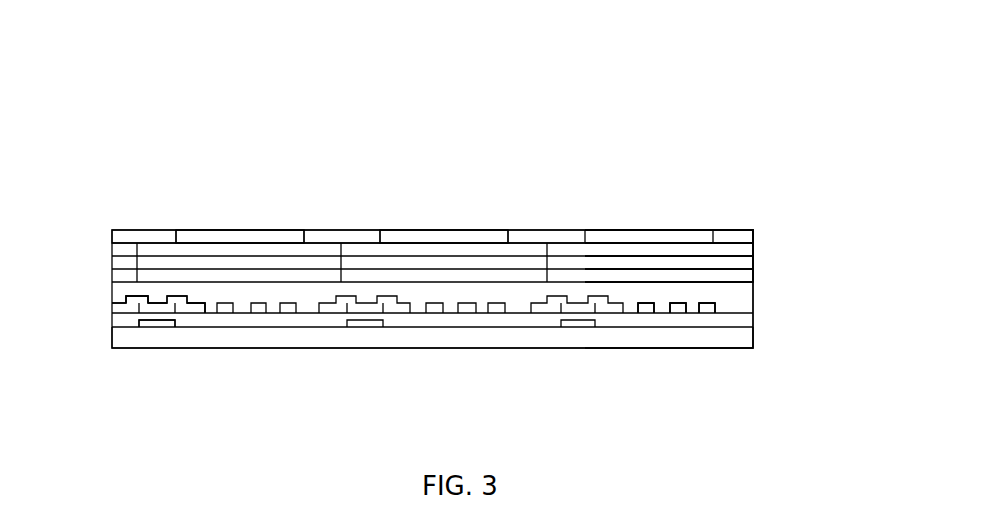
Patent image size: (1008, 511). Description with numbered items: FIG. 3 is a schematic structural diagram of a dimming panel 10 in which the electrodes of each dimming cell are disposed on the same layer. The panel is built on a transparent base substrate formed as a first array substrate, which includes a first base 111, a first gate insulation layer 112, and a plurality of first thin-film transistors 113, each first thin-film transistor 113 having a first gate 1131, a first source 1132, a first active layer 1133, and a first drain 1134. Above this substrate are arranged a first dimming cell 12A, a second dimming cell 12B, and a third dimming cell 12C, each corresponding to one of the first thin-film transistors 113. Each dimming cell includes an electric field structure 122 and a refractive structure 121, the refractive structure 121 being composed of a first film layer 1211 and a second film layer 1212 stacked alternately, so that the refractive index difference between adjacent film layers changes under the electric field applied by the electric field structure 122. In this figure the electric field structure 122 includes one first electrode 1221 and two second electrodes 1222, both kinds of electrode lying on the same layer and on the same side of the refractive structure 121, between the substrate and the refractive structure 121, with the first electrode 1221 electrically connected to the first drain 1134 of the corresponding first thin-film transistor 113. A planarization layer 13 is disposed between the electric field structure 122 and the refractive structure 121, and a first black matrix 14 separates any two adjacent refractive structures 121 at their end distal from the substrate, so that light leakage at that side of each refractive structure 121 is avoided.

The dimming panel 10 is at (438, 61).
The first black matrix 14 is at (111, 231).
The planarization layer 13 is at (111, 295).
The first gate insulation layer 112 is at (111, 321).
The first base 111 is at (111, 339).
The first thin-film transistor 113 is at (78, 367).
The first gate 1131 is at (169, 323).
The first source 1132 is at (132, 311).
The first active layer 1133 is at (150, 311).
The first drain 1134 is at (192, 311).
The first dimming cell 12A is at (180, 221).
The second dimming cell 12B is at (386, 221).
The third dimming cell 12C is at (835, 121).
The refractive structure 121 is at (785, 97).
The first film layer 1211 is at (643, 259).
The second film layer 1212 is at (623, 274).
The electric field structure 122 is at (783, 360).
The first electrode 1221 is at (679, 314).
The second electrode 1222 is at (707, 314).